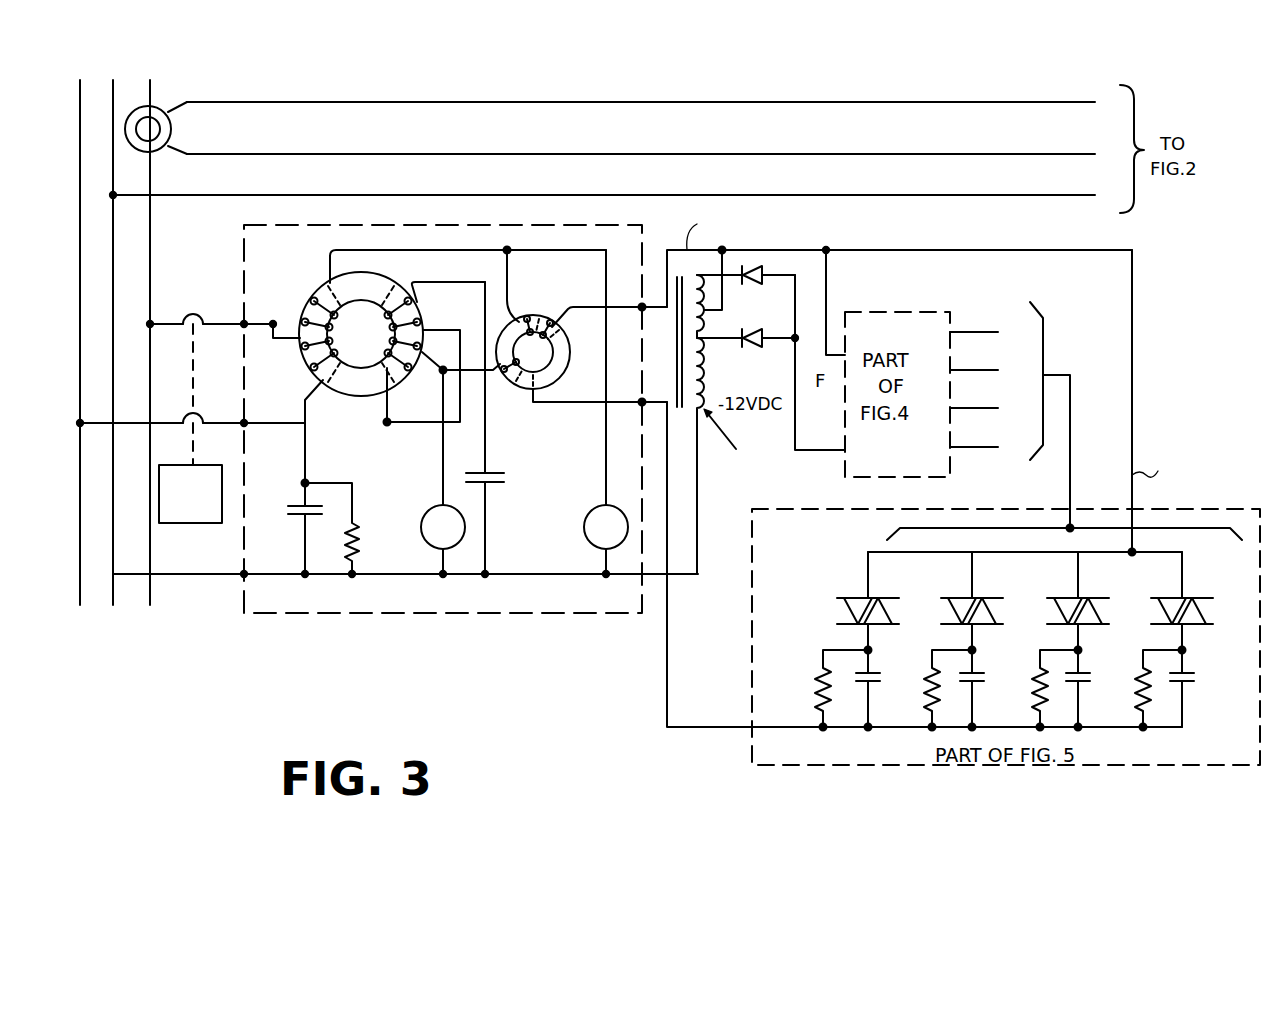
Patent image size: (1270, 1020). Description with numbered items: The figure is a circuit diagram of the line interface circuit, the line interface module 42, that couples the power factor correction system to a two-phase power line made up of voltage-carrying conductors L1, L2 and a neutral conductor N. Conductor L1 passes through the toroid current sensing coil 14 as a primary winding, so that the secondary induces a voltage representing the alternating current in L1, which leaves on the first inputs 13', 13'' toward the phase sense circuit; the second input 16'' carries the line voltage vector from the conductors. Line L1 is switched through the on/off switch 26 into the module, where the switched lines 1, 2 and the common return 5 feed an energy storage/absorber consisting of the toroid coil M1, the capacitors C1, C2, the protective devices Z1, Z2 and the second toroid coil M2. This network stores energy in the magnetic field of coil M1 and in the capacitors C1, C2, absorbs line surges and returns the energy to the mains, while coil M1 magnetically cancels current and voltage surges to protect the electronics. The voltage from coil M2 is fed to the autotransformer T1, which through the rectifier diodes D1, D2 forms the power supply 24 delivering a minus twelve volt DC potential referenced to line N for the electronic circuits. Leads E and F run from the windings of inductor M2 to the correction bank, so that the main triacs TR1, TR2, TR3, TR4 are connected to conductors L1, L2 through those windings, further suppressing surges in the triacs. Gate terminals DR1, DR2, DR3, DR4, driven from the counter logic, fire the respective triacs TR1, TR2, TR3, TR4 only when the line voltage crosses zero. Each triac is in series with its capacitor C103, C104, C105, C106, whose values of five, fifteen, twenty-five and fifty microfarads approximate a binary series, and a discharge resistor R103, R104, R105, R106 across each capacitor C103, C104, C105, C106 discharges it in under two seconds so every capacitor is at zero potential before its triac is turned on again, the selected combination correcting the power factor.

The toroid current sensing coil 14 is at (172, 128).
The first input 13' is at (641, 84).
The first input 13'' is at (641, 136).
The second input 16'' is at (603, 180).
The winding terminal 1 is at (212, 357).
The winding terminal 2 is at (191, 431).
The common rail 5 is at (405, 563).
The on/off switch 26 is at (170, 523).
The line interface module 42 is at (345, 613).
The power supply 24 is at (732, 441).
The toroid coil M1 is at (355, 388).
The toroid coil M2 is at (556, 367).
The capacitor C1 is at (312, 498).
The capacitor C2 is at (495, 428).
The protective device Z1 is at (606, 412).
The protective device Z2 is at (443, 472).
The autotransformer T1 is at (712, 327).
The rectifier diode D1 is at (778, 265).
The rectifier diode D2 is at (746, 354).
The lead E is at (667, 465).
The lead F is at (930, 344).
The voltage-carrying conductor L1 is at (151, 331).
The voltage-carrying conductor L2 is at (76, 331).
The neutral conductor N is at (112, 331).
The terminal DR1 is at (974, 321).
The terminal DR2 is at (974, 359).
The terminal DR3 is at (974, 397).
The terminal DR4 is at (974, 436).
The main triac TR1 is at (890, 581).
The main triac TR2 is at (994, 581).
The main triac TR3 is at (1100, 581).
The main triac TR4 is at (1204, 581).
The discharge resistor R103 is at (816, 690).
The discharge resistor R104 is at (922, 700).
The discharge resistor R105 is at (1031, 690).
The discharge resistor R106 is at (1134, 690).
The capacitor C103 is at (886, 673).
The capacitor C104 is at (990, 673).
The capacitor C105 is at (1096, 673).
The capacitor C106 is at (1200, 673).